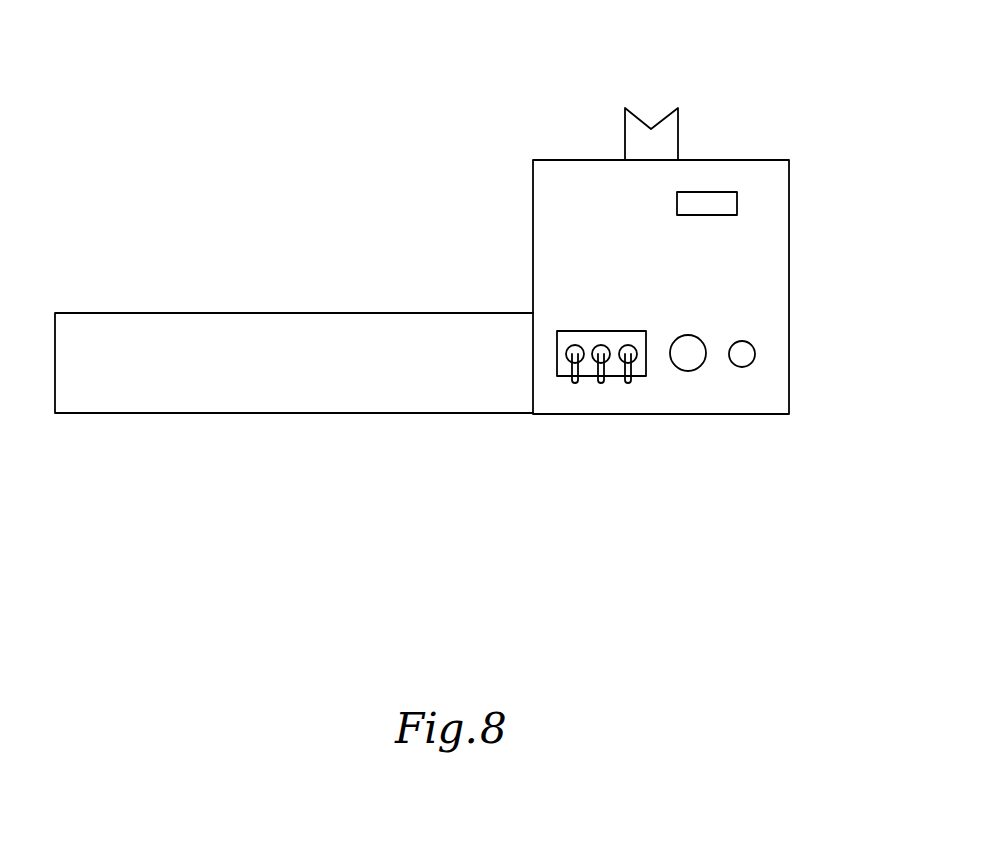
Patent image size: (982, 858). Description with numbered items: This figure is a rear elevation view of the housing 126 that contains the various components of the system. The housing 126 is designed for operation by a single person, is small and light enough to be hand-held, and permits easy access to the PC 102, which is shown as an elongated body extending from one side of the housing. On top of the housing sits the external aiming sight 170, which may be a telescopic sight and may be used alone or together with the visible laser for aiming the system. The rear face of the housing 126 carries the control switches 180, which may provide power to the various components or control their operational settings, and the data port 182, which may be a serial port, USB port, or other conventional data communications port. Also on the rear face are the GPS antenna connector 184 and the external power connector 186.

The PC 102 is at (133, 405).
The housing 126 is at (308, 515).
The external aiming sight 170 is at (664, 116).
The control switches 180 is at (584, 392).
The data port 182 is at (737, 207).
The GPS antenna connector 184 is at (755, 348).
The external power connector 186 is at (688, 371).